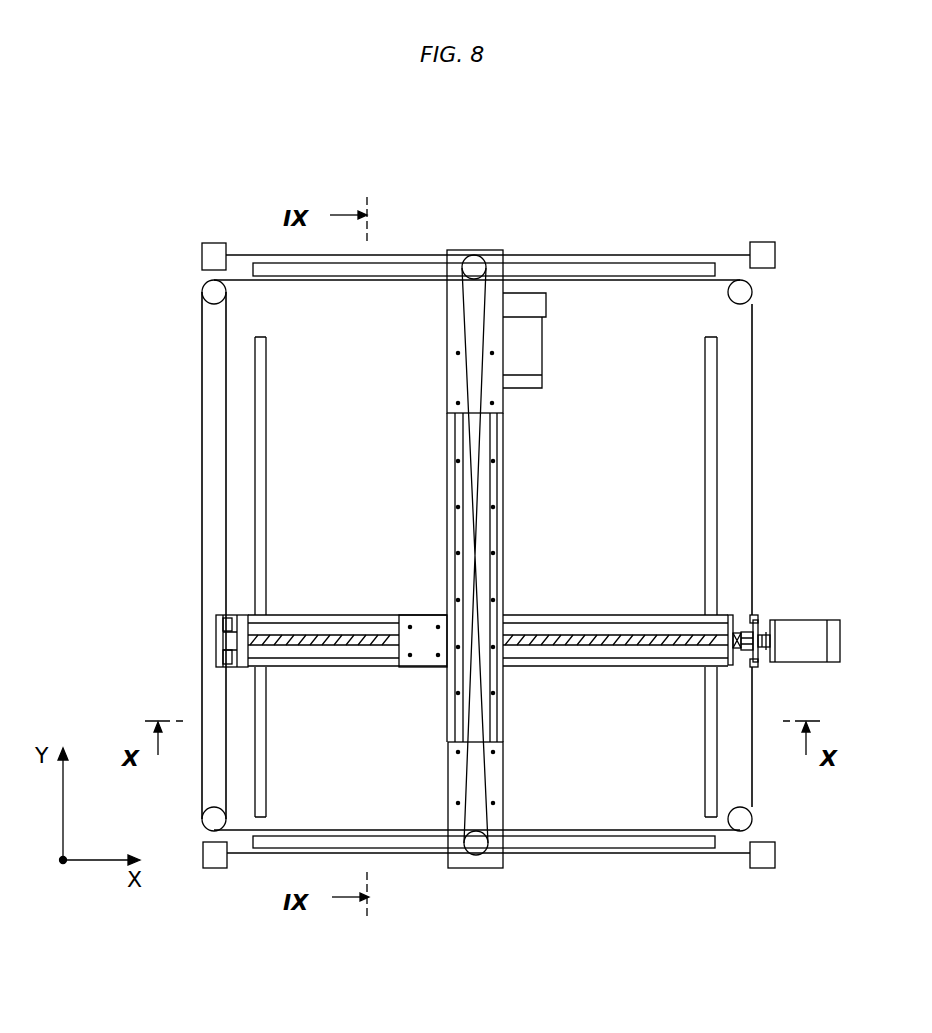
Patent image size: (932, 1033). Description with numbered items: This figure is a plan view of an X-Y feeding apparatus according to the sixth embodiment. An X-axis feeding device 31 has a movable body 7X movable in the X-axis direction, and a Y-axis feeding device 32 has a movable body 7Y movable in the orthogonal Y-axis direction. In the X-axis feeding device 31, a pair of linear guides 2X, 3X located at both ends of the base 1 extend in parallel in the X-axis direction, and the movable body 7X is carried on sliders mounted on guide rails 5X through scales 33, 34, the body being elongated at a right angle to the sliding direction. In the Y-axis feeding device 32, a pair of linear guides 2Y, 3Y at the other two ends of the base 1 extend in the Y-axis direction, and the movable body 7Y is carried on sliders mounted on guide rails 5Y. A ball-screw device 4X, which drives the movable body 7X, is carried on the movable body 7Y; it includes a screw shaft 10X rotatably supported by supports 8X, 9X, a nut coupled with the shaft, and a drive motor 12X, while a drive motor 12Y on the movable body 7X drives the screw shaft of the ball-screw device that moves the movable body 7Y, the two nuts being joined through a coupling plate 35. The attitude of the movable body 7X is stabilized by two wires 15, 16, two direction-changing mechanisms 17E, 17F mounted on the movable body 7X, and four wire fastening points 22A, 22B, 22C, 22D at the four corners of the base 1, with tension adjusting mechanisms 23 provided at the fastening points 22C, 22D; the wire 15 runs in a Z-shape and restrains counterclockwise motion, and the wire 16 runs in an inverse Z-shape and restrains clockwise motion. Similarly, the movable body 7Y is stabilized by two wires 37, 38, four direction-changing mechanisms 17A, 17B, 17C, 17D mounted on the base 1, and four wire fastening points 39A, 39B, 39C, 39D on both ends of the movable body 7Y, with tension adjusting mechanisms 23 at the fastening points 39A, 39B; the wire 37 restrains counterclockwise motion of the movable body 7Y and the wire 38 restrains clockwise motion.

The base 1 is at (667, 337).
The linear guide 2X is at (482, 236).
The linear guide 2Y is at (504, 555).
The linear guide 3X is at (482, 598).
The linear guide 3Y is at (722, 560).
The ball-screw device 4X is at (546, 630).
The guide rail 5X is at (372, 276).
The guide rail 5Y is at (268, 350).
The movable body 7X is at (505, 490).
The movable body 7Y is at (637, 620).
The support 8X is at (255, 650).
The support 9X is at (724, 658).
The screw shaft 10X is at (607, 646).
The drive motor 12X is at (838, 637).
The drive motor 12Y is at (527, 352).
The wire 15 is at (400, 262).
The wire 16 is at (568, 255).
The direction-changing mechanism 17A is at (213, 292).
The direction-changing mechanism 17B is at (212, 820).
The direction-changing mechanism 17C is at (755, 820).
The direction-changing mechanism 17D is at (752, 292).
The direction-changing mechanism 17E is at (474, 256).
The direction-changing mechanism 17F is at (476, 855).
The wire fastening point 22A is at (215, 258).
The wire fastening point 22B is at (215, 870).
The wire fastening point 22C is at (762, 868).
The wire fastening point 22D is at (776, 258).
The tension adjusting mechanism 23 is at (760, 243).
The X-axis feeding device 31 is at (474, 556).
The Y-axis feeding device 32 is at (532, 556).
The scale 33 is at (455, 386).
The scale 34 is at (495, 783).
The coupling plate 35 is at (424, 628).
The wire 37 is at (755, 487).
The wire 38 is at (755, 788).
The wire fastening point 39A is at (232, 625).
The wire fastening point 39B is at (240, 660).
The wire fastening point 39C is at (760, 618).
The wire fastening point 39D is at (763, 665).